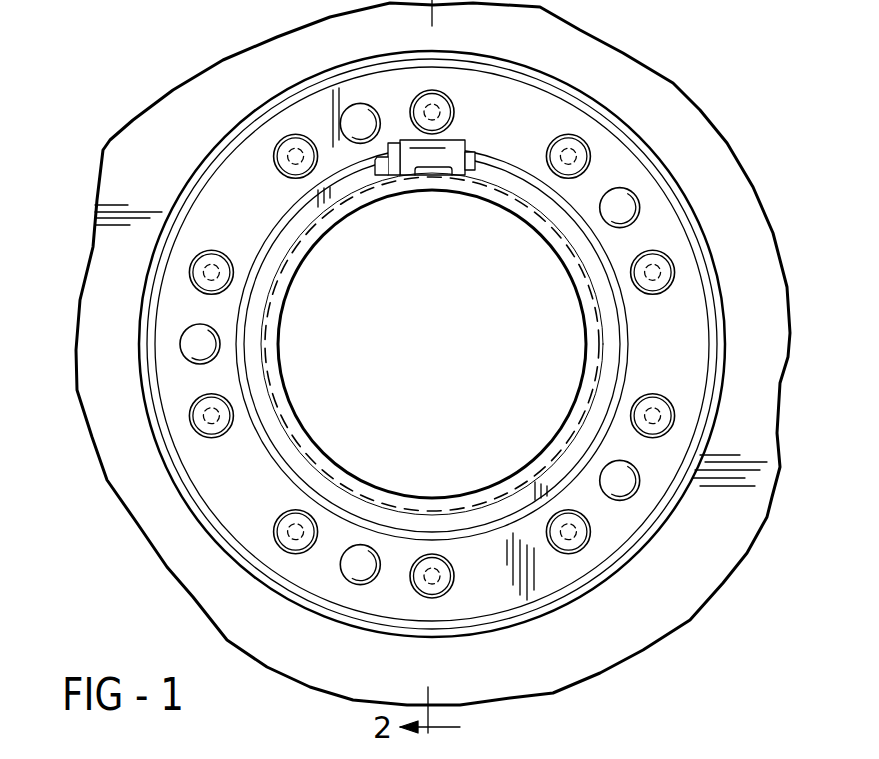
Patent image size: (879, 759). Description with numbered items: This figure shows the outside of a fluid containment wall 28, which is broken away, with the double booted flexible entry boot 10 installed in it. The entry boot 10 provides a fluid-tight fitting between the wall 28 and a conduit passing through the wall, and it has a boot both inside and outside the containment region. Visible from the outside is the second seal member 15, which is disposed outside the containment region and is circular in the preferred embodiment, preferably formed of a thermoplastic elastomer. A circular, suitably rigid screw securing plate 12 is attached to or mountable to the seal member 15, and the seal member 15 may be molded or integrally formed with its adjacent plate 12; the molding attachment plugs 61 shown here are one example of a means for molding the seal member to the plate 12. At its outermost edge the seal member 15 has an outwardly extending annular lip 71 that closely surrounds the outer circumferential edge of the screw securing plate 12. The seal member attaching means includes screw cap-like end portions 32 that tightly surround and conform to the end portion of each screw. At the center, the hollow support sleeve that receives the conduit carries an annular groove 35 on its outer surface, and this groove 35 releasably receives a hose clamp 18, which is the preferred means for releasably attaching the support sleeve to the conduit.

The double booted flexible entry boot 10 is at (21, 94).
The screw securing plate 12 is at (475, 600).
The second seal member 15 is at (623, 353).
The hose clamp 18 is at (467, 140).
The wall 28 is at (700, 583).
The screw cap-like end portion 32 is at (580, 550).
The annular groove 35 is at (488, 188).
The molding attachment plug 61 is at (625, 186).
The outwardly extending annular lip 71 is at (257, 113).